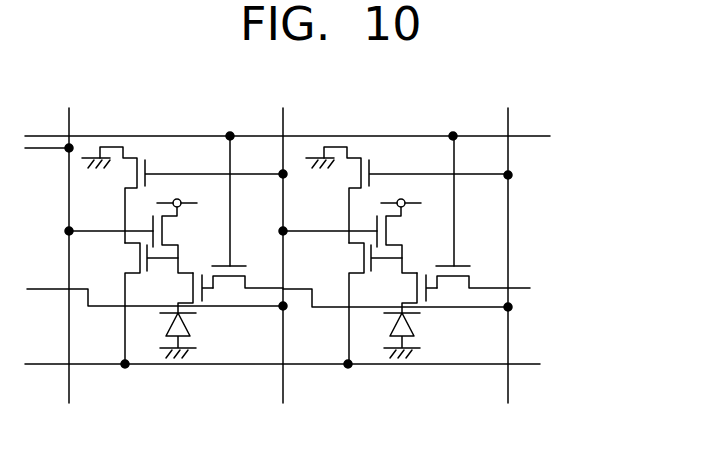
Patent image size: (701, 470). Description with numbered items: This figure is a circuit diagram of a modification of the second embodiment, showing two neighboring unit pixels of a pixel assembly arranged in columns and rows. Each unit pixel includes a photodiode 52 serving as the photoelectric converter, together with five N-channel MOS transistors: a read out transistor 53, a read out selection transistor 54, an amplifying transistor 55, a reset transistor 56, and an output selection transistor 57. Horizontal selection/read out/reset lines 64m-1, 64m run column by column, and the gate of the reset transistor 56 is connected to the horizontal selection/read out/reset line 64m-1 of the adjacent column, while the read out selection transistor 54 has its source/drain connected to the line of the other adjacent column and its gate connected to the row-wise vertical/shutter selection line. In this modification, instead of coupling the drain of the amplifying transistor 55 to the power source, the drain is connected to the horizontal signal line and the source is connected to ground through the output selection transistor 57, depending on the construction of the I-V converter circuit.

The photodiode 52 is at (191, 322).
The read out transistor 53 is at (179, 295).
The read out selection transistor 54 is at (250, 271).
The amplifying transistor 55 is at (122, 264).
The reset transistor 56 is at (173, 232).
The output selection transistor 57 is at (118, 177).
The horizontal selection/read out/reset line 64m-1 is at (70, 388).
The horizontal selection/read out/reset line 64m is at (284, 388).